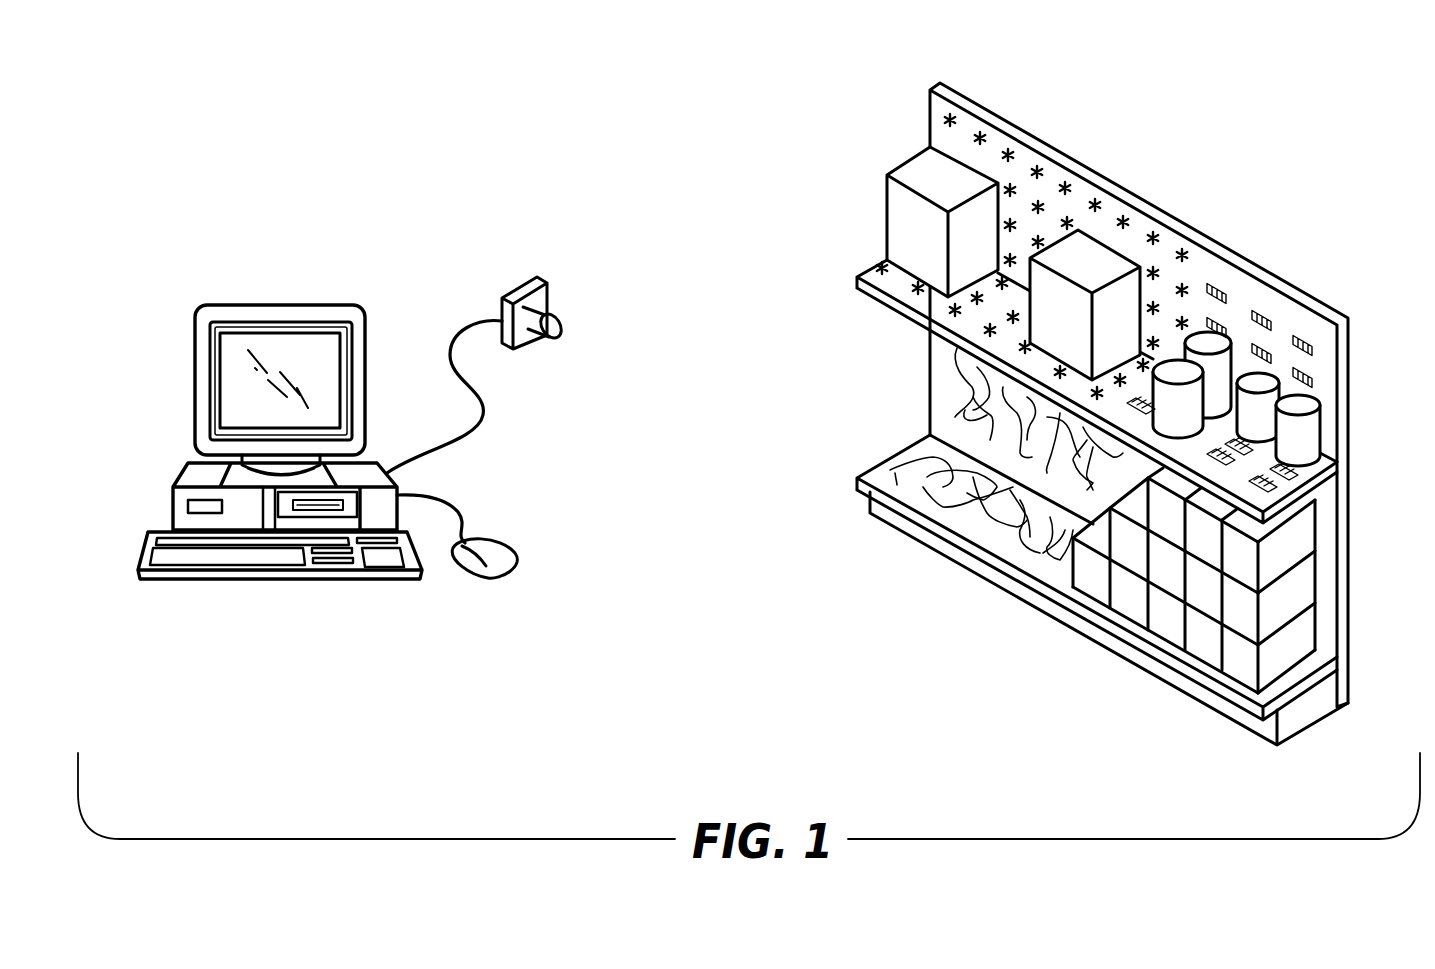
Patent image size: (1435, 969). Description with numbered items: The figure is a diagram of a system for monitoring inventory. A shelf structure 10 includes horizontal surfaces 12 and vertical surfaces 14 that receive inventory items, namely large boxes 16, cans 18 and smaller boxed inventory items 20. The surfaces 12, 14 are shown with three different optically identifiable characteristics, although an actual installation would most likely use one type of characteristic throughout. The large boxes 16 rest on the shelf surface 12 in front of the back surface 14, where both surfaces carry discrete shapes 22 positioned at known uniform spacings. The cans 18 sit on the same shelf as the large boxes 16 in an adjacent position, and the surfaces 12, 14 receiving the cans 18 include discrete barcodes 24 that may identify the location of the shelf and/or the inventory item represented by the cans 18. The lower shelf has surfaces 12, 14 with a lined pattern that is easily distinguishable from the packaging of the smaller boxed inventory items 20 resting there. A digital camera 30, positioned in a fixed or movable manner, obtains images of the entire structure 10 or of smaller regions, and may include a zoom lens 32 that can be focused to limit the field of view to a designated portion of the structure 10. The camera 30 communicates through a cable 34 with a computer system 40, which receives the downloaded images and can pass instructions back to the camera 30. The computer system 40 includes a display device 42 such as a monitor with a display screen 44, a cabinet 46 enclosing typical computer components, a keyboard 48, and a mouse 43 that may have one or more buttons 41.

The shelf structure 10 is at (858, 187).
The horizontal surfaces 12 is at (870, 272).
The vertical surfaces 14 is at (942, 120).
The large boxes 16 is at (913, 175).
The cans 18 is at (1178, 372).
The smaller boxed inventory items 20 is at (1200, 658).
The discrete shapes 22 is at (1045, 167).
The discrete barcodes 24 is at (1317, 367).
The digital camera 30 is at (527, 290).
The zoom lens 32 is at (547, 307).
The cable 34 is at (468, 380).
The computer system 40 is at (276, 276).
The buttons 41 is at (468, 541).
The display device 42 is at (195, 352).
The mouse 43 is at (512, 573).
The display screen 44 is at (298, 348).
The cabinet 46 is at (173, 502).
The keyboard 48 is at (212, 582).